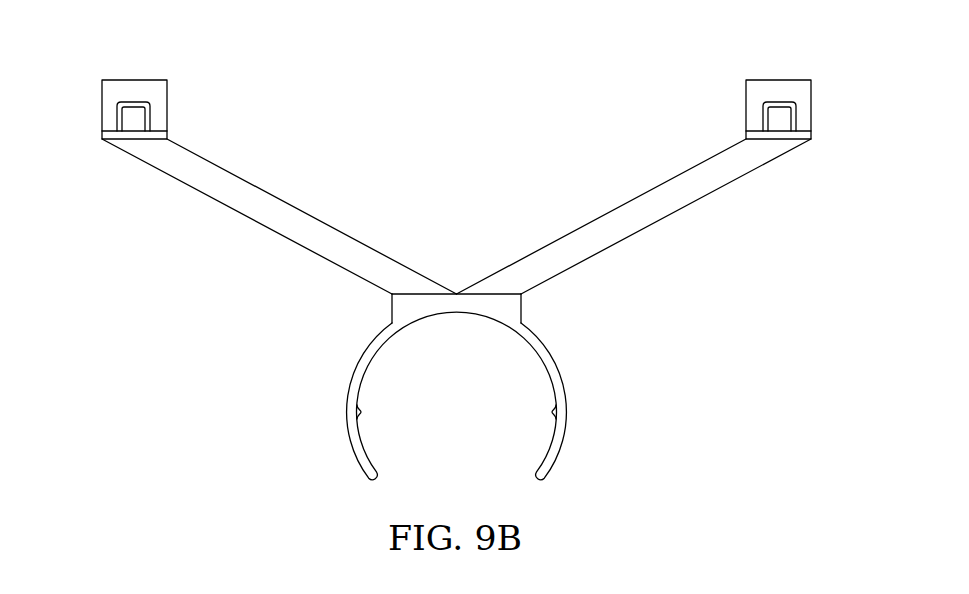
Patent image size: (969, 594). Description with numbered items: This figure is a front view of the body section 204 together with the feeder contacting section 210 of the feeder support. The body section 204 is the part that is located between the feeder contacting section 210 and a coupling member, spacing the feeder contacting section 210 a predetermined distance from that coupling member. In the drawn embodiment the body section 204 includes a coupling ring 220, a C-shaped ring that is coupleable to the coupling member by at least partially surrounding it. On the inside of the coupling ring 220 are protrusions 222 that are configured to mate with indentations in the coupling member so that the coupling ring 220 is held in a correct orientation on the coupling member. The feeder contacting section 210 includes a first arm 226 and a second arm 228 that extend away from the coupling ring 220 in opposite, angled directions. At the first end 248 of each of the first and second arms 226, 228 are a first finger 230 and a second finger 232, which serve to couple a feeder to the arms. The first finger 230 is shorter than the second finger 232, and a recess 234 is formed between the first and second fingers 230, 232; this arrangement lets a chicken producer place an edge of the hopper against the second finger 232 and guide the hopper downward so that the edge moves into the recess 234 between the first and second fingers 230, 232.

The body section 204 is at (590, 375).
The feeder contacting section 210 is at (748, 290).
The coupling ring 220 is at (562, 451).
The protrusions 222 is at (364, 412).
The first arm 226 is at (246, 217).
The second arm 228 is at (665, 218).
The first finger 230 is at (150, 121).
The second finger 232 is at (133, 80).
The recess 234 is at (117, 121).
The first end 248 is at (190, 72).